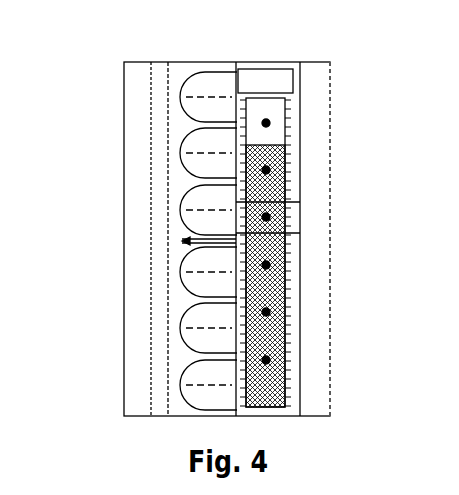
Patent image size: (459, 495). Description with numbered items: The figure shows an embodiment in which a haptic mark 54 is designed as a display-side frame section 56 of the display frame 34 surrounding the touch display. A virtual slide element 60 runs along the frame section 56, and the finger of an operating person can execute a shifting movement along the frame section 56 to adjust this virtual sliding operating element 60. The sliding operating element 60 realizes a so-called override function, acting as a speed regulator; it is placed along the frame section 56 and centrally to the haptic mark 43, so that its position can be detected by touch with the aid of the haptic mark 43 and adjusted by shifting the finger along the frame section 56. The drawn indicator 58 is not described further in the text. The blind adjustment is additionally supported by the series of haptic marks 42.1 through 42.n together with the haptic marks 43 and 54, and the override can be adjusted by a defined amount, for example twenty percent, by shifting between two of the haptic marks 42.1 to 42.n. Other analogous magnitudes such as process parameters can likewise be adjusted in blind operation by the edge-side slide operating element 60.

The display frame 34 is at (140, 170).
The haptic mark 42.1 is at (182, 103).
The haptic mark 42.n is at (182, 393).
The haptic mark 43 is at (182, 241).
The haptic mark 54 is at (285, 233).
The display-side frame section 56 is at (285, 204).
The percentage display 58 is at (268, 68).
The virtual slide element 60 is at (285, 133).